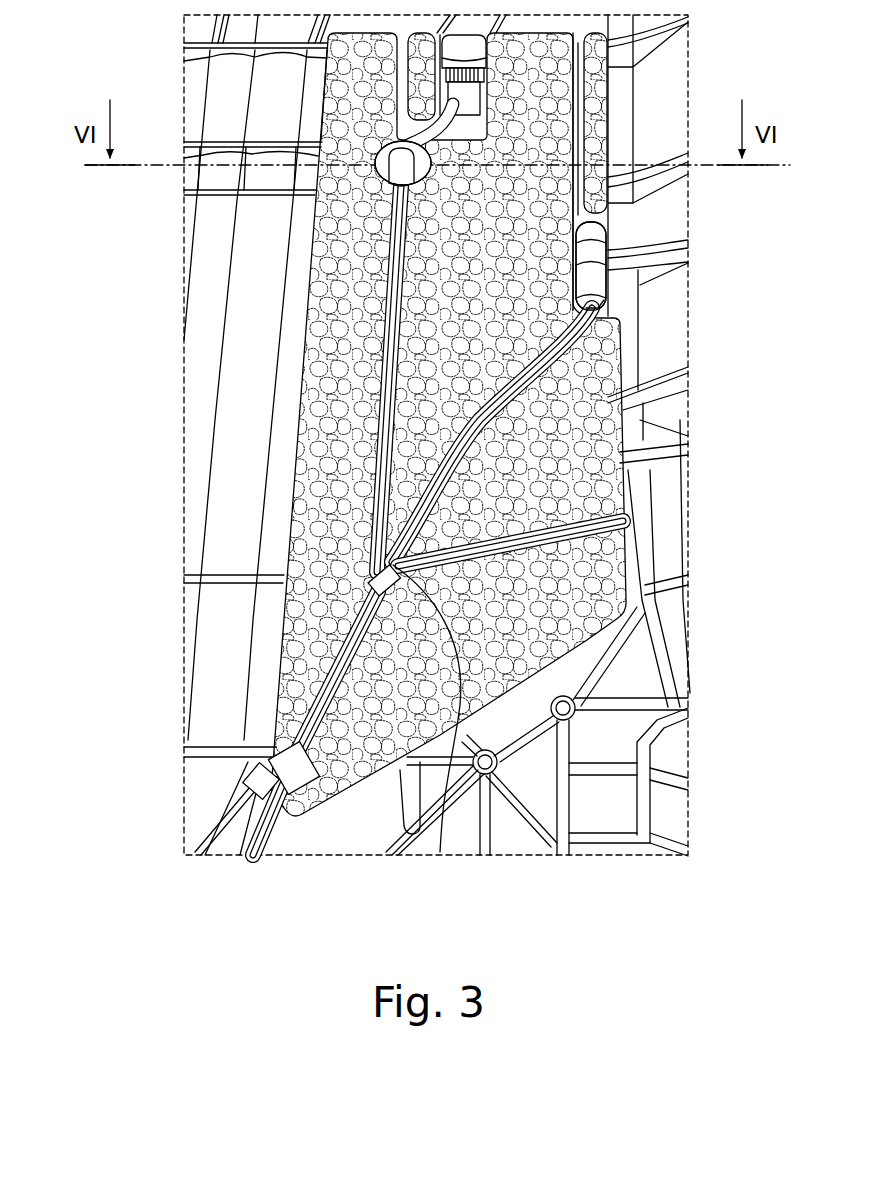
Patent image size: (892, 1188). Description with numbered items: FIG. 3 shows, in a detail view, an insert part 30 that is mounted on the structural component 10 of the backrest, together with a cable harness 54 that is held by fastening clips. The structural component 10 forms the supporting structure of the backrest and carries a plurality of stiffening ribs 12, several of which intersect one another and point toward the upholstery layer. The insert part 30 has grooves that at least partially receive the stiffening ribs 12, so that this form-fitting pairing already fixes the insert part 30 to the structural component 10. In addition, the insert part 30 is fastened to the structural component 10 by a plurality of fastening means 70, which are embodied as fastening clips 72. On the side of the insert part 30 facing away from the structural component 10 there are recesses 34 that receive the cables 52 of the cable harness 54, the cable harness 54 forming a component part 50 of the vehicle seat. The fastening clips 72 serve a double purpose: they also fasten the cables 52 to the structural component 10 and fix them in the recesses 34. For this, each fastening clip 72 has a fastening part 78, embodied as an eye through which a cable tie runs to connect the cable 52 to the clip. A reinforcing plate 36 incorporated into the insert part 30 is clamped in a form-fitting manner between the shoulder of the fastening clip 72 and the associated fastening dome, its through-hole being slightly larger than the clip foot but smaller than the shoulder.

The structural component 10 is at (190, 320).
The stiffening ribs 12 is at (688, 583).
The insert part 30 is at (628, 476).
The recesses 34 is at (625, 456).
The reinforcing plate 36 is at (440, 852).
The component part 50 is at (246, 356).
The cables 52 is at (396, 301).
The cable harness 54 is at (282, 852).
The fastening means 70 is at (442, 428).
The fastening clips 72 is at (376, 152).
The fastening part 78 is at (608, 221).